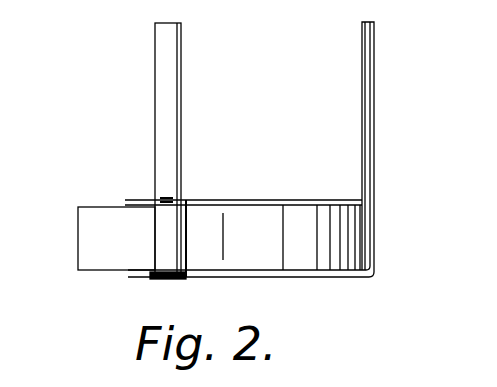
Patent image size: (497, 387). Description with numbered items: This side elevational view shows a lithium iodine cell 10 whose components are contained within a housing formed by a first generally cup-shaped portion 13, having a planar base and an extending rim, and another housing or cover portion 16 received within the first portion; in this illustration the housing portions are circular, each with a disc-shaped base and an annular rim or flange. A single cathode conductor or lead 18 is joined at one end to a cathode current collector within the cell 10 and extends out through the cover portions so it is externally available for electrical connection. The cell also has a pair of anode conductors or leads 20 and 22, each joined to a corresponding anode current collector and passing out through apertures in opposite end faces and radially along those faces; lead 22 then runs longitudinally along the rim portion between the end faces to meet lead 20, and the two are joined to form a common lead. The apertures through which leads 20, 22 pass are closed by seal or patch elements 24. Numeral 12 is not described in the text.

The lithium iodine cell 10 is at (134, 160).
The base 12 is at (93, 272).
The first generally cup-shaped portion 13 is at (95, 234).
The housing or cover portion 16 is at (100, 207).
The cathode conductor or lead 18 is at (170, 39).
The anode conductor or lead 20 is at (362, 42).
The anode conductor or lead 22 is at (376, 44).
The seal or patch element 24 is at (187, 198).